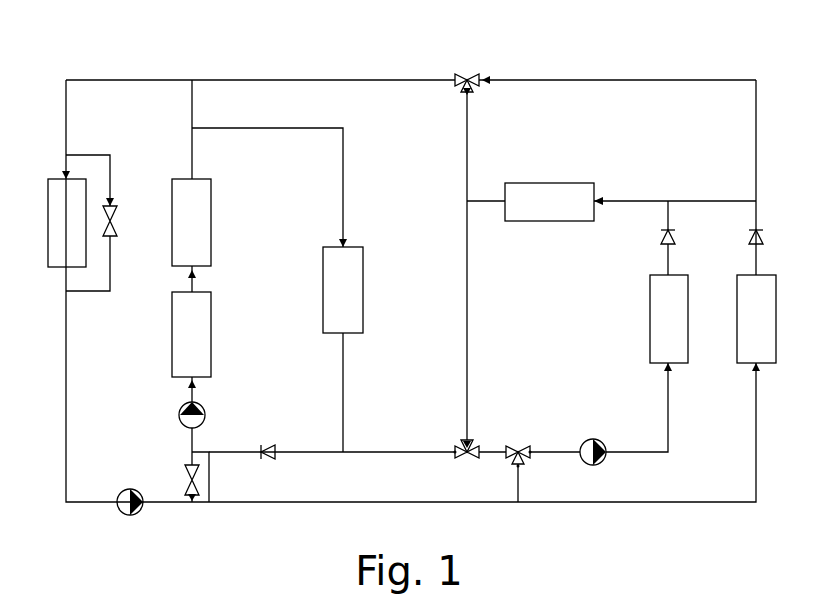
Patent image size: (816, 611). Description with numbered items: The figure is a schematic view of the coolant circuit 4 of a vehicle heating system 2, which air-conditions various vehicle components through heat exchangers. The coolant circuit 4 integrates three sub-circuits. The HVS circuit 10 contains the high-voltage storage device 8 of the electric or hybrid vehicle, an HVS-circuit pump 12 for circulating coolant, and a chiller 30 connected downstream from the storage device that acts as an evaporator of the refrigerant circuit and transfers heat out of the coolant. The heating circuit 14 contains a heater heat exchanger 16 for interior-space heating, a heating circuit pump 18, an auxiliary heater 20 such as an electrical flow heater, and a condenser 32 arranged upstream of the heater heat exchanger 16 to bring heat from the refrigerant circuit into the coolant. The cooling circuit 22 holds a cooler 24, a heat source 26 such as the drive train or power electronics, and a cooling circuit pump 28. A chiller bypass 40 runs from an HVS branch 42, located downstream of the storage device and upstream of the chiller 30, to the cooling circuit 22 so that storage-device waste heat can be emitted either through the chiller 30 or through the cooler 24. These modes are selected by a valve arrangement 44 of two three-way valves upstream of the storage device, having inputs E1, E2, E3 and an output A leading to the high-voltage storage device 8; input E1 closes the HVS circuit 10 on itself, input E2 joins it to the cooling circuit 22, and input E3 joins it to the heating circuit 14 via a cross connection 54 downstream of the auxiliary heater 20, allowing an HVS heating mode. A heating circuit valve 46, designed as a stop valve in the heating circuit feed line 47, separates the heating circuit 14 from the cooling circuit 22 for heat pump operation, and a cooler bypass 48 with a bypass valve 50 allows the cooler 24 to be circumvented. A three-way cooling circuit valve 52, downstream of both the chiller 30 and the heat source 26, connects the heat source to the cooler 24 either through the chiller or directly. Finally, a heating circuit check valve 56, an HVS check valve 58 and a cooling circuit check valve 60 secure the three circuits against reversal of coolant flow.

The heating system 2 is at (90, 46).
The coolant circuit 4 is at (126, 70).
The high-voltage storage device 8 is at (669, 323).
The HVS circuit 10 is at (470, 246).
The HVS-circuit pump 12 is at (598, 440).
The heating circuit 14 is at (340, 196).
The heater heat exchanger 16 is at (191, 173).
The heating circuit pump 18 is at (180, 410).
The auxiliary heater 20 is at (343, 349).
The cooling circuit 22 is at (405, 82).
The cooler 24 is at (67, 219).
The heat source 26 is at (756, 323).
The cooling circuit pump 28 is at (122, 492).
The chiller 30 is at (535, 202).
The condenser 32 is at (191, 321).
The chiller bypass 40 is at (720, 200).
The HVS branch 42 is at (666, 200).
The valve arrangement 44 is at (525, 445).
The heating circuit valve 46 is at (186, 470).
The heating circuit feed line 47 is at (212, 477).
The cooler bypass 48 is at (112, 172).
The bypass valve 50 is at (118, 216).
The cooling circuit valve 52 is at (474, 72).
The cross connection 54 is at (454, 448).
The heating circuit check valve 56 is at (264, 446).
The HVS check valve 58 is at (660, 238).
The cooling circuit check valve 60 is at (748, 238).
The input E1 is at (470, 438).
The input E2 is at (515, 465).
The input E3 is at (457, 448).
The output A is at (532, 458).